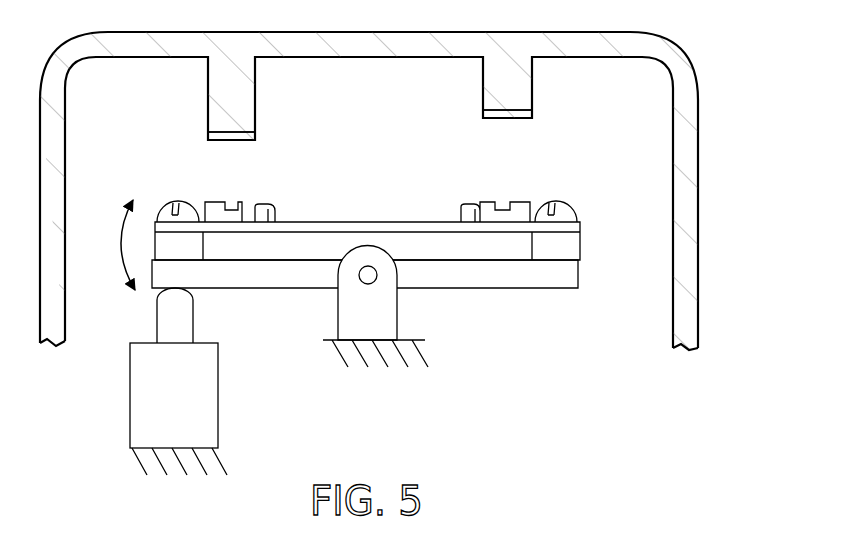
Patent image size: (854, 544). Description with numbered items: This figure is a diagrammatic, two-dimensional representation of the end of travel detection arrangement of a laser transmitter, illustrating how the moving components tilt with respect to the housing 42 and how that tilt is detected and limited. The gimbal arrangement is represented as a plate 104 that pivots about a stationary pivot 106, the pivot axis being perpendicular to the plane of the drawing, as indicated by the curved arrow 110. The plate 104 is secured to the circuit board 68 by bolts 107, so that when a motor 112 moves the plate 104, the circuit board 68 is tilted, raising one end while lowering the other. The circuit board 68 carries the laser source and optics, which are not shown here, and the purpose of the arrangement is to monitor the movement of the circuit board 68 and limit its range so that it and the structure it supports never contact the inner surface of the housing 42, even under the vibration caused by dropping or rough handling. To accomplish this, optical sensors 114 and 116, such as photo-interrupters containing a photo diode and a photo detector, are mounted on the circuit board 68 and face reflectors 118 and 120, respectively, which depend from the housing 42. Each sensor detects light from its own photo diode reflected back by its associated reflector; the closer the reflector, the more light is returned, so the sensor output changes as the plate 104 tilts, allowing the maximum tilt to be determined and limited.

The housing 42 is at (698, 70).
The circuit board 68 is at (502, 235).
The plate 104 is at (445, 278).
The stationary pivot 106 is at (359, 280).
The bolts 107 is at (170, 200).
The arrow 110 is at (122, 230).
The motor 112 is at (130, 385).
The optical sensor 114 is at (250, 200).
The optical sensor 116 is at (483, 200).
The reflector 118 is at (232, 142).
The reflector 120 is at (505, 120).